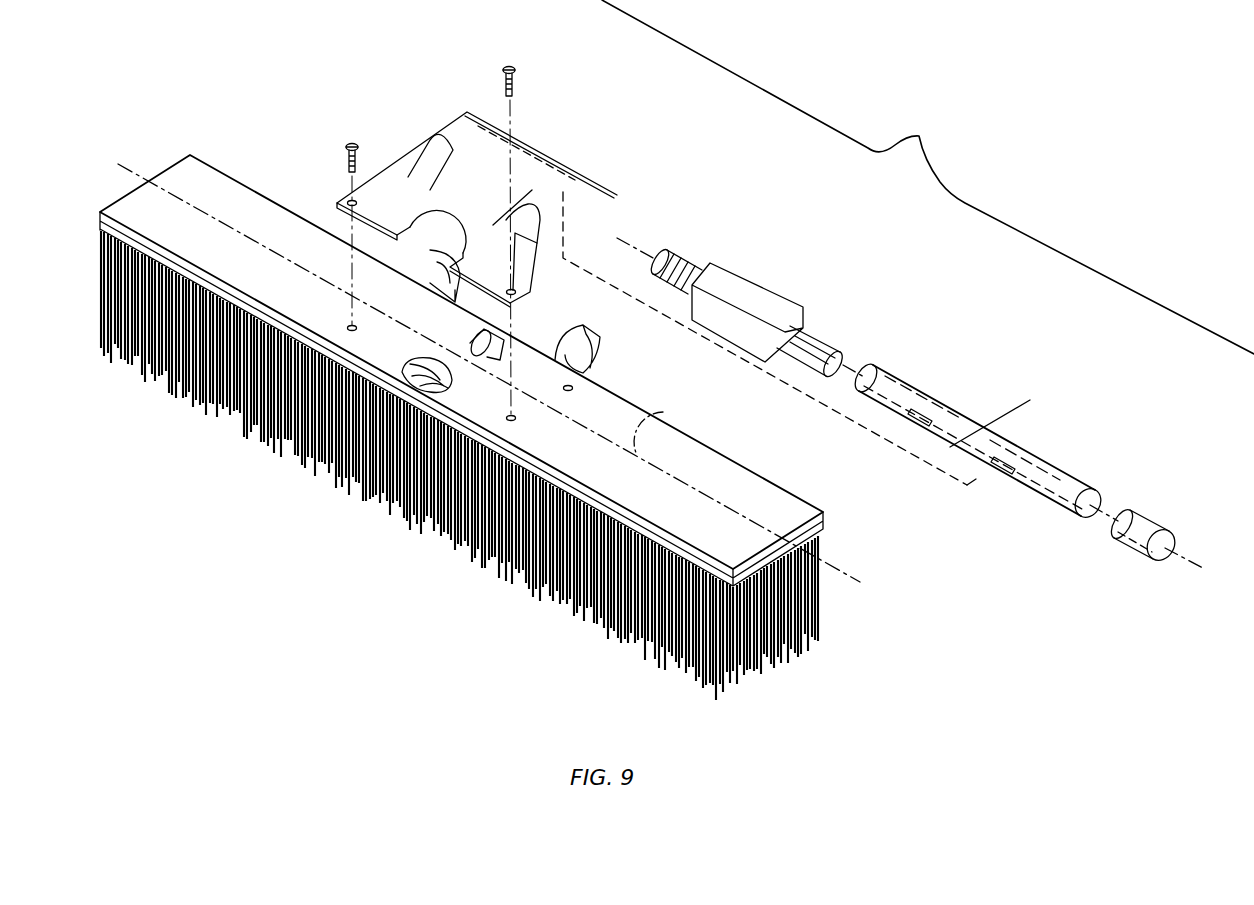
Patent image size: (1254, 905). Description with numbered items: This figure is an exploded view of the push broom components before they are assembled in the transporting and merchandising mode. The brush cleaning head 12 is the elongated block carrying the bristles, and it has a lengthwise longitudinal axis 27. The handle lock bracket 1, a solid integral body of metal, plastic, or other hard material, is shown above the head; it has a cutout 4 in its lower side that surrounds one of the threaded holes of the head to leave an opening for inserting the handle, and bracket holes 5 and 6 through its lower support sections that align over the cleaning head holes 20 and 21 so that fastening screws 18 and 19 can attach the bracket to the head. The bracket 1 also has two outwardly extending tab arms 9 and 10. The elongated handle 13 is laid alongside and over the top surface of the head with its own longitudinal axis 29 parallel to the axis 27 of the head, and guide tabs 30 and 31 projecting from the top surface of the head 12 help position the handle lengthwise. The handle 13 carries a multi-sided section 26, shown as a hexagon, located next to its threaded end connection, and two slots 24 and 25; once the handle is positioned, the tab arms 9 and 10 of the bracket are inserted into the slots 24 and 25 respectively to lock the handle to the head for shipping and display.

The handle lock bracket 1 is at (472, 181).
The cutout 4 is at (446, 235).
The bracket hole 5 is at (350, 200).
The bracket hole 6 is at (512, 295).
The tab arm 9 is at (420, 160).
The tab arm 10 is at (520, 190).
The brush cleaning head 12 is at (750, 480).
The handle 13 is at (1007, 437).
The fastening screw 18 is at (349, 142).
The fastening screw 19 is at (515, 70).
The cleaning head hole 20 is at (350, 325).
The cleaning head hole 21 is at (514, 420).
The slot 24 is at (1003, 460).
The slot 25 is at (920, 412).
The multi-sided section 26 is at (740, 270).
The longitudinal axis 27 is at (665, 412).
The longitudinal axis 29 is at (1150, 505).
The guide tab 30 is at (455, 288).
The guide tab 31 is at (600, 370).